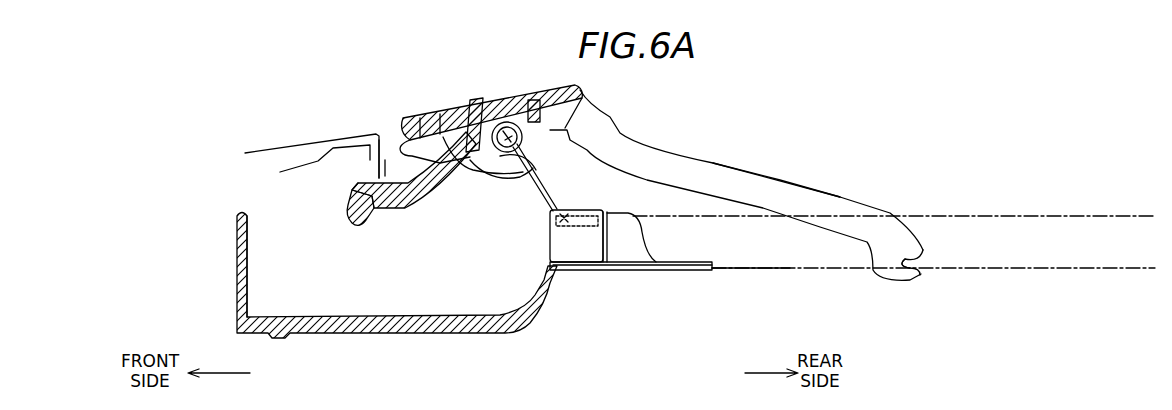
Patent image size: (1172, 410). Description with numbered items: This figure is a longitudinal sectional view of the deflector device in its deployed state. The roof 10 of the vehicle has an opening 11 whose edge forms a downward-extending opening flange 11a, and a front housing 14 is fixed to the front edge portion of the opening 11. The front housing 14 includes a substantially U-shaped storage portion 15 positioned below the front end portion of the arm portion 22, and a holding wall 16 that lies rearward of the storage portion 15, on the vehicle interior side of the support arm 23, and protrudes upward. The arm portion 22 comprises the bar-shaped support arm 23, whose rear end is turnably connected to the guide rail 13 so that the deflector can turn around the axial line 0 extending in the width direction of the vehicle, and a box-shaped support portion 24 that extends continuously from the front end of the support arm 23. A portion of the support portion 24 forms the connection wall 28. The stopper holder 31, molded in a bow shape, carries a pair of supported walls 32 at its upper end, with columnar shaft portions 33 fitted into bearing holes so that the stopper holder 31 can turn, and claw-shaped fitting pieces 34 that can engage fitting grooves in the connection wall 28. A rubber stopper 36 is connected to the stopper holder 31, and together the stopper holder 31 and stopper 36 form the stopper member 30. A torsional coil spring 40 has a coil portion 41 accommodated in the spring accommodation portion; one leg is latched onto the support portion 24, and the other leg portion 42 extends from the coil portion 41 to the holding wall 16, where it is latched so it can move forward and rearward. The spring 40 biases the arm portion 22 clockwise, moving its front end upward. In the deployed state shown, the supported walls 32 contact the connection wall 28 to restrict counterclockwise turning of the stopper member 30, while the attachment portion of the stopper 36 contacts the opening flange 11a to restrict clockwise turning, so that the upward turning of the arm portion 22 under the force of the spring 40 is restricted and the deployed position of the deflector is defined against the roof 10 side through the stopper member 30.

The roof 10 is at (302, 143).
The opening 11 is at (378, 135).
The opening flange 11a is at (389, 168).
The guide rail 13 is at (792, 272).
The front housing 14 is at (488, 325).
The storage portion 15 is at (240, 262).
The holding wall 16 is at (628, 240).
The arm portion 22 is at (658, 152).
The support arm 23 is at (762, 183).
The support portion 24 is at (520, 90).
The connection wall 28 is at (477, 107).
The stopper member 30 is at (411, 216).
The stopper holder 31 is at (408, 212).
The supported wall 32 is at (460, 188).
The shaft portion 33 is at (441, 122).
The fitting piece 34 is at (490, 178).
The stopper 36 is at (360, 224).
The spring 40 is at (528, 155).
The coil portion 41 is at (537, 147).
The other leg portion 42 is at (530, 198).
The axial line 0 is at (925, 262).